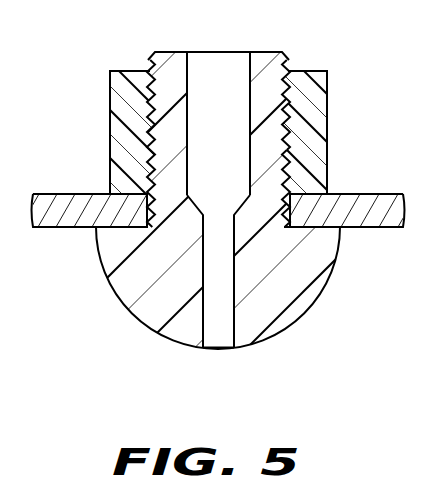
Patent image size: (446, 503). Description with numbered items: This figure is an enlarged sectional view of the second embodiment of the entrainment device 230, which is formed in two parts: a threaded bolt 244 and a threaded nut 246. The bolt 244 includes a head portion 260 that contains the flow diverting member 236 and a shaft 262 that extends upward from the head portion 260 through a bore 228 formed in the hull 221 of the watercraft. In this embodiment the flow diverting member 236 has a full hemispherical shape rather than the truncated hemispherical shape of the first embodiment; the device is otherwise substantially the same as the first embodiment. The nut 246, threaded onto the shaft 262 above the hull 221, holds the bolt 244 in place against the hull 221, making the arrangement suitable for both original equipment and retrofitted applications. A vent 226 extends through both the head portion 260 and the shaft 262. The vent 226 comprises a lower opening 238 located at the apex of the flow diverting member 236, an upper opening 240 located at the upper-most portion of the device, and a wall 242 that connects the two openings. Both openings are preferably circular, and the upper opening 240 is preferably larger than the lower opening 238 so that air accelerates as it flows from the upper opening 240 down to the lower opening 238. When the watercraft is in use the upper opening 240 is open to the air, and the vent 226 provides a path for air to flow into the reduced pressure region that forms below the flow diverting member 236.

The upper opening 240 is at (216, 51).
The shaft 262 is at (273, 82).
The bore 228 is at (284, 200).
The threaded nut 246 is at (122, 110).
The plate / wall 221 is at (62, 236).
The head portion 260 is at (127, 287).
The threaded bolt 244 is at (152, 316).
The flow diverting member 236 is at (292, 290).
The vent 226 is at (216, 322).
The wall 242 is at (233, 305).
The lower opening 238 is at (227, 302).
The entrainment device 230 is at (334, 390).